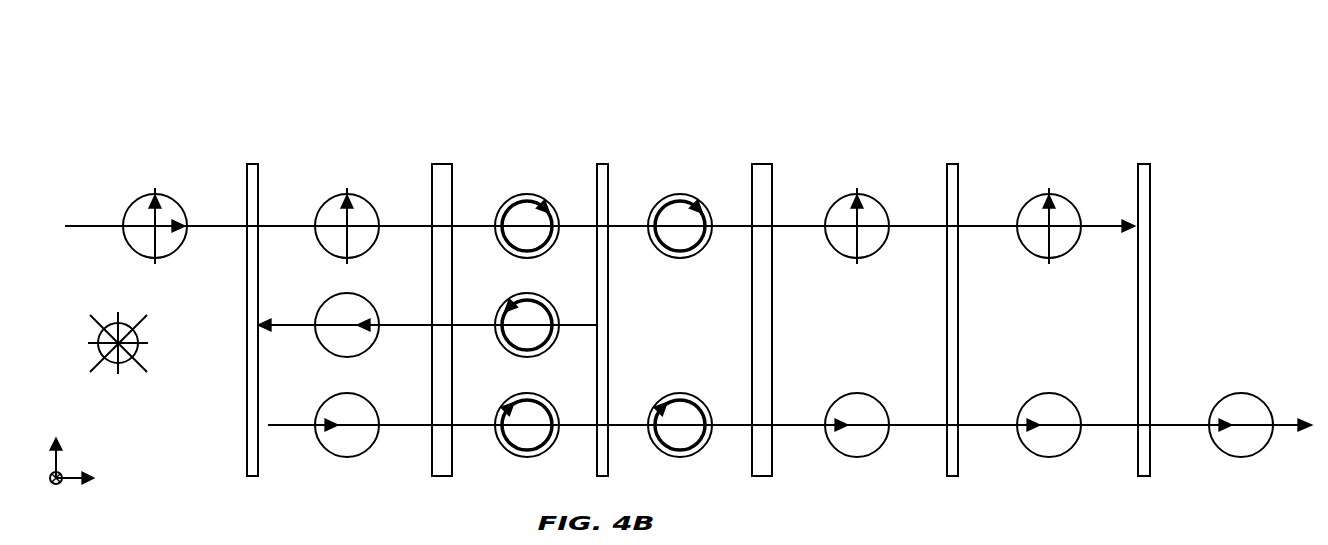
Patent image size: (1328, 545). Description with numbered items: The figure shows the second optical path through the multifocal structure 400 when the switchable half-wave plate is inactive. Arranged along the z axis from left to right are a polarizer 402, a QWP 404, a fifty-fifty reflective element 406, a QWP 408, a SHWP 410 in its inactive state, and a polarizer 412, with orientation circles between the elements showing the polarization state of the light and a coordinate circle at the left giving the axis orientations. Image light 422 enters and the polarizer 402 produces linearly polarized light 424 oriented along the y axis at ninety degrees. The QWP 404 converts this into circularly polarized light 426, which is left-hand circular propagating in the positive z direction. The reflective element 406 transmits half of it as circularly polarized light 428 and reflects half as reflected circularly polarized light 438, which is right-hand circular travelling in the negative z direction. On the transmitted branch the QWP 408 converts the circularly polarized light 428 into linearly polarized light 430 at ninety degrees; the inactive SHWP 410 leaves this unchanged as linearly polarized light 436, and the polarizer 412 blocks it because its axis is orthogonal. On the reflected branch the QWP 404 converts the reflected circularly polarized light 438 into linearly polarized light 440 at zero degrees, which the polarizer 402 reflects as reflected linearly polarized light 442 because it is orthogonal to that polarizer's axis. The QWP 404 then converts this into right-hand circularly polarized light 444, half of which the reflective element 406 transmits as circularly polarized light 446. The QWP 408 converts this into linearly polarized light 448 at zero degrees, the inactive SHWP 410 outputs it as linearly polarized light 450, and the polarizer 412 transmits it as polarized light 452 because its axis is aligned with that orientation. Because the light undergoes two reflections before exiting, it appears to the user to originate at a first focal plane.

The multifocal structure 400 is at (1275, 21).
The polarizer 402 is at (253, 268).
The QWP 404 is at (442, 268).
The 50:50 reflective element 406 is at (602, 255).
The QWP 408 is at (761, 268).
The SHWP 410 is at (952, 241).
The polarizer 412 is at (1144, 268).
The image light 422 is at (137, 225).
The linearly polarized light 424 is at (349, 216).
The circularly polarized light 426 is at (526, 213).
The circularly polarized light 428 is at (681, 214).
The linearly polarized light 430 is at (865, 217).
The linearly polarized light 436 is at (1053, 217).
The reflected circularly polarized light 438 is at (527, 315).
The linearly polarized light 440 is at (349, 314).
The reflected linearly polarized light 442 is at (349, 417).
The circularly polarized light 444 is at (527, 417).
The circularly polarized light 446 is at (682, 417).
The linearly polarized light 448 is at (864, 417).
The linearly polarized light 450 is at (1053, 417).
The polarized light 452 is at (1240, 417).